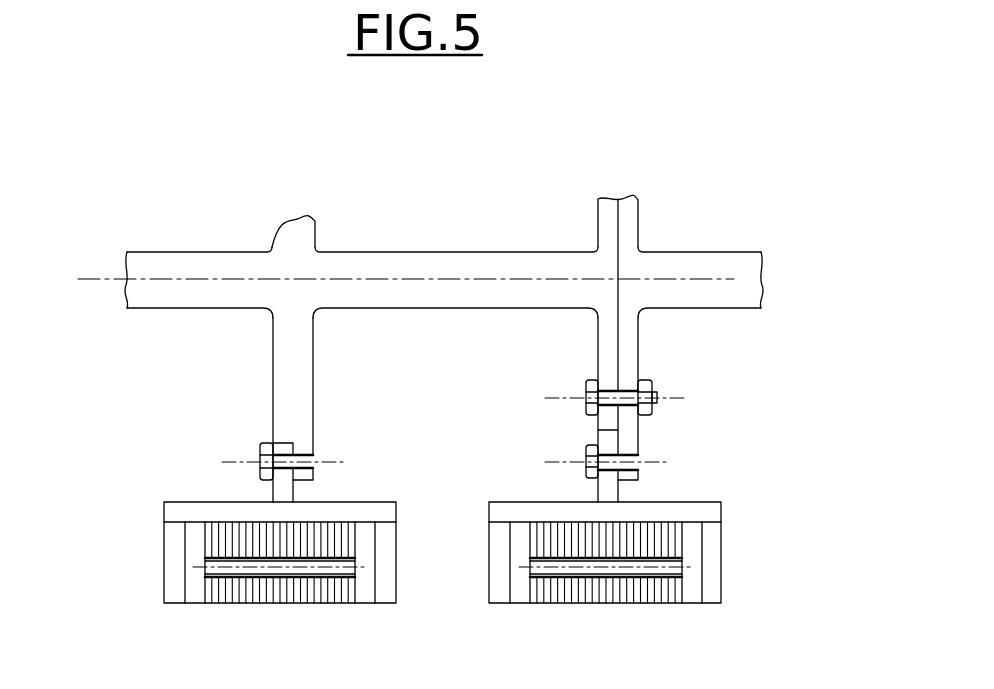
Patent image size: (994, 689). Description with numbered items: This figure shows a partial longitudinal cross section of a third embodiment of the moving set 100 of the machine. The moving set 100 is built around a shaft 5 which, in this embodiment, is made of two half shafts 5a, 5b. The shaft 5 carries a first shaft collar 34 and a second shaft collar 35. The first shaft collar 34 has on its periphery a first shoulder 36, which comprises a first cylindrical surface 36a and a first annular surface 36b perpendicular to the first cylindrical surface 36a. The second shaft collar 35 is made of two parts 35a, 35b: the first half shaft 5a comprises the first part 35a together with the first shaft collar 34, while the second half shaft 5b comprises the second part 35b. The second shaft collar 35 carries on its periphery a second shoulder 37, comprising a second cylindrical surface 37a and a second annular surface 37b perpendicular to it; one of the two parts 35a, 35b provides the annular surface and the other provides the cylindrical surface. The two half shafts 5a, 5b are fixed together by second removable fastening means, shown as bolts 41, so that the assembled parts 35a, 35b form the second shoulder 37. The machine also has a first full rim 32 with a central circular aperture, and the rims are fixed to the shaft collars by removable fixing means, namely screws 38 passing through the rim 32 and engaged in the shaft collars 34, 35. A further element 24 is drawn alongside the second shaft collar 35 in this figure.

The moving set 100 is at (105, 200).
The shaft 5 is at (142, 252).
The first half shaft 5a is at (193, 258).
The second half shaft 5b is at (744, 258).
The first shaft collar 34 is at (315, 343).
The second shaft collar 35 is at (639, 362).
The first part of the second shaft collar 35a is at (602, 221).
The second part of the second shaft collar 35b is at (638, 220).
The first shoulder 36 is at (258, 437).
The first cylindrical surface 36a is at (283, 443).
The first annular surface 36b is at (294, 451).
The screws 38 is at (318, 470).
The first full rim 32 is at (202, 500).
The second base 24 is at (405, 495).
The bolts 41 is at (591, 382).
The second shoulder 37 is at (595, 437).
The second cylindrical surface 37a is at (608, 430).
The second annular surface 37b is at (620, 440).